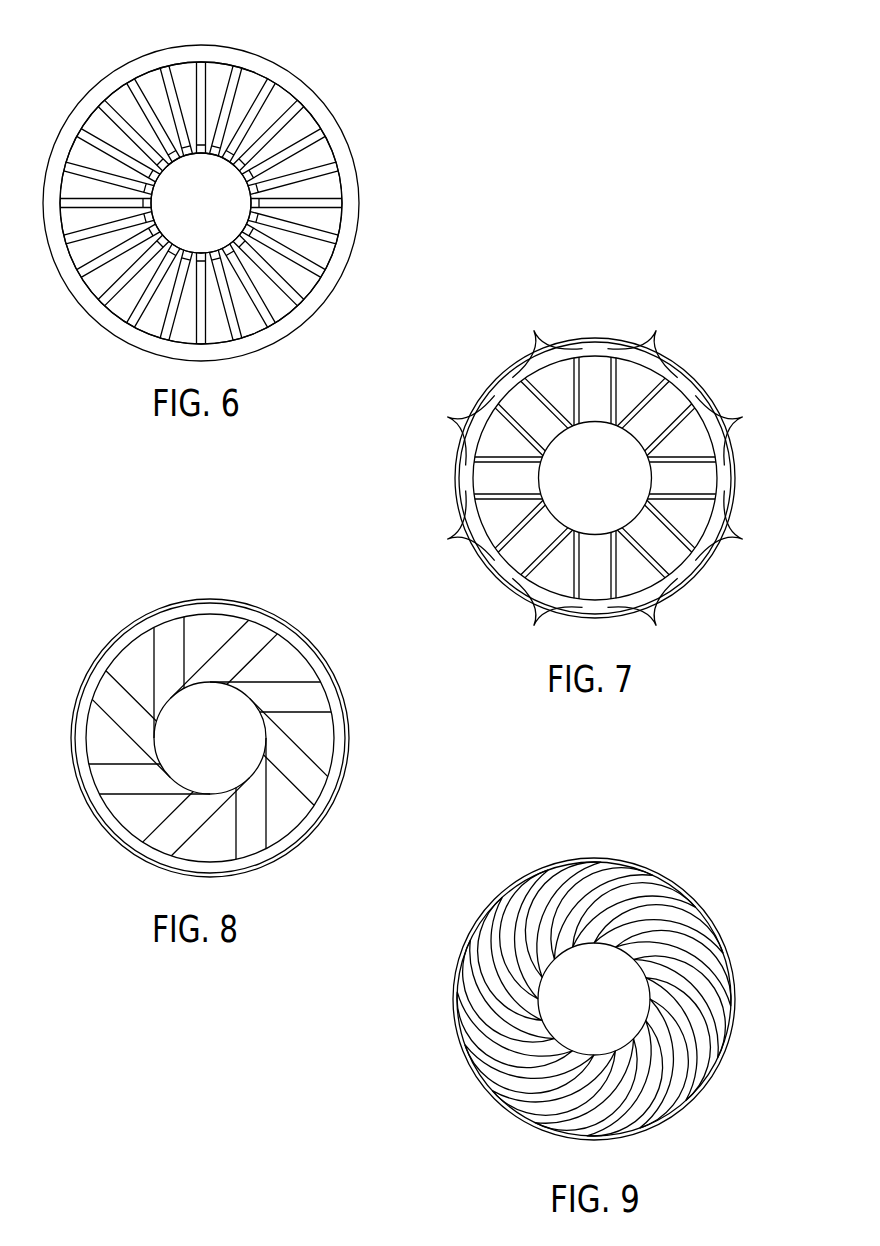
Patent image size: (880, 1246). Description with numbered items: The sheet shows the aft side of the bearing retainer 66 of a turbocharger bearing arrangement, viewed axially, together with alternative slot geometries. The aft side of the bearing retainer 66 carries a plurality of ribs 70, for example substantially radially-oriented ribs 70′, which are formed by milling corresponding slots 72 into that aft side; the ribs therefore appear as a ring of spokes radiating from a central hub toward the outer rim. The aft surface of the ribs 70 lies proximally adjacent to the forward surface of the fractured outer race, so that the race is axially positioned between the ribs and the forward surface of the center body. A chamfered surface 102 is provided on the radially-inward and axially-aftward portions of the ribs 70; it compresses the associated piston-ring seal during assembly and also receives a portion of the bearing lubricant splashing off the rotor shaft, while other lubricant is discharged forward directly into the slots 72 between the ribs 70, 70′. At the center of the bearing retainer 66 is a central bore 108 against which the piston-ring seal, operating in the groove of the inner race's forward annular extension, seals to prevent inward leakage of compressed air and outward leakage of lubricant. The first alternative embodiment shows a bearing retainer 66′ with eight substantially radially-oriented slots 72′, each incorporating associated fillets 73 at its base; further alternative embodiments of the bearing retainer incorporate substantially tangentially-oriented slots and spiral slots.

In FIG. 6, the bearing retainer 66 is at (306, 75).
In FIG. 6, the ribs 70 is at (330, 133).
In FIG. 6, the substantially radially-oriented ribs 70′ is at (330, 133).
In FIG. 6, the slots 72 is at (323, 158).
In FIG. 6, the chamfered surface 102 is at (243, 169).
In FIG. 6, the central bore 108 is at (154, 222).
In FIG. 7, the bearing retainer 66′ is at (677, 338).
In FIG. 7, the substantially radially-oriented slots 72′ is at (594, 364).
In FIG. 7, the fillets 73 is at (534, 330).